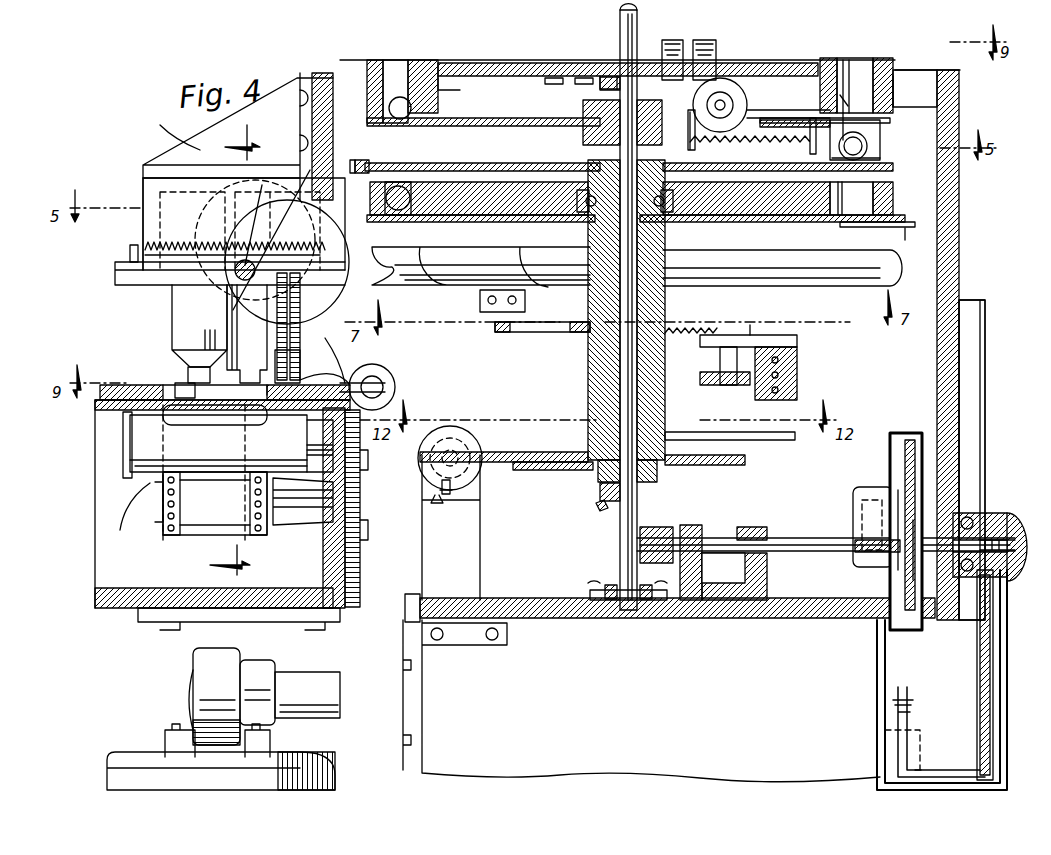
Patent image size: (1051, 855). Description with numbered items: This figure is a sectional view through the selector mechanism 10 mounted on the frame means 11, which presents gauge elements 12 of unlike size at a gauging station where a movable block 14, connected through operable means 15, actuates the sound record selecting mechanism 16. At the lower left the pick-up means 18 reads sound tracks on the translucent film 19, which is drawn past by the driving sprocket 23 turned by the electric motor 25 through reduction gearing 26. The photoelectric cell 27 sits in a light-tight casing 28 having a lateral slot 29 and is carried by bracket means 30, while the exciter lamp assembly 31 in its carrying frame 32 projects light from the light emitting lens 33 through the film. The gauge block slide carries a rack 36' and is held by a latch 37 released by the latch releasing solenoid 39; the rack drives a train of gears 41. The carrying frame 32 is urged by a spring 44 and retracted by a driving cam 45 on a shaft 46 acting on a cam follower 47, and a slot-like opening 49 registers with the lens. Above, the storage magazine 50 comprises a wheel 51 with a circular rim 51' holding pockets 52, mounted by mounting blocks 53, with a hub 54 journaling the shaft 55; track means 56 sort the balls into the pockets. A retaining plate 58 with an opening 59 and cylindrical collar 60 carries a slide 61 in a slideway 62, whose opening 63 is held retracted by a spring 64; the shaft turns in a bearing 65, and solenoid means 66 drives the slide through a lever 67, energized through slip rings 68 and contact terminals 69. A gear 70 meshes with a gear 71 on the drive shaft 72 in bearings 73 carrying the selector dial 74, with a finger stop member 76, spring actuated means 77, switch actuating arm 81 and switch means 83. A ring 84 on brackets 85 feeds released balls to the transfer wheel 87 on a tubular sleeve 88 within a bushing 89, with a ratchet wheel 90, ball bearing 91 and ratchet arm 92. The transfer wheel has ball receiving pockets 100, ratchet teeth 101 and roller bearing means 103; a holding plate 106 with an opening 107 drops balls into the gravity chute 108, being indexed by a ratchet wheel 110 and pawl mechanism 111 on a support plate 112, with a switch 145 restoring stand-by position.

The selector mechanism 10 is at (155, 126).
The frame means 11 is at (312, 127).
The gauge elements 12 is at (403, 118).
The movable block 14 is at (235, 350).
The operable means 15 is at (378, 350).
The sound record selecting mechanism 16 is at (130, 330).
The light sensitive pick-up means 18 is at (125, 532).
The translucent film 19 is at (195, 415).
The driving sprocket 23 is at (211, 503).
The electric motor 25 is at (138, 762).
The reduction gearing 26 is at (388, 590).
The photoelectric cell 27 is at (180, 390).
The light-tight casing 28 is at (125, 436).
The lateral slot 29 is at (245, 422).
The bracket means 30 is at (303, 501).
The exciter lamp assembly 31 is at (170, 226).
The carrying frame 32 is at (195, 255).
The light emitting lens 33 is at (172, 343).
The rack 36' is at (274, 326).
The latch 37 is at (335, 372).
The latch releasing solenoid 39 is at (395, 380).
The train of gears 41 is at (313, 352).
The spring 44 is at (248, 230).
The driving cam 45 is at (165, 205).
The shaft 46 is at (225, 300).
The cam follower 47 is at (153, 270).
The slot-like opening 49 is at (205, 395).
The storage magazine 50 is at (905, 42).
The wheel 51 is at (628, 56).
The circular rim 51' is at (683, 91).
The pockets 52 is at (420, 75).
The mounting blocks 53 is at (322, 73).
The hub 54 is at (603, 80).
The shaft 55 is at (638, 38).
The track means 56 is at (376, 60).
The retaining plate 58 is at (497, 113).
The opening 59 is at (875, 128).
The cylindrical collar 60 is at (870, 155).
The slide 61 is at (890, 120).
The slideway 62 is at (770, 118).
The opening 63 is at (853, 106).
The spring 64 is at (745, 145).
The bearing 65 is at (598, 598).
The solenoid means 66 is at (730, 85).
The lever 67 is at (762, 95).
The slip rings 68 is at (584, 85).
The contact terminals 69 is at (705, 40).
The gear 70 is at (600, 512).
The gear 71 is at (660, 527).
The drive shaft 72 is at (798, 538).
The bearings 73 is at (705, 530).
The selector dial 74 is at (985, 416).
The finger stop member 76 is at (1007, 755).
The spring actuated means 77 is at (890, 478).
The switch actuating arm 81 is at (983, 680).
The switch means 83 is at (920, 740).
The ring 84 is at (540, 170).
The brackets 85 is at (365, 160).
The transfer wheel 87 is at (775, 222).
The tubular sleeve 88 is at (575, 368).
The bushing 89 is at (668, 240).
The ratchet wheel 90 is at (545, 470).
The ball bearing 91 is at (680, 450).
The ratchet arm 92 is at (525, 452).
The ball receiving pockets 100 is at (893, 195).
The ratchet teeth 101 is at (370, 215).
The roller bearing means 103 is at (588, 182).
The holding plate 106 is at (480, 222).
The opening 107 is at (855, 228).
The gravity chute 108 is at (450, 283).
The ratchet wheel 110 is at (500, 332).
The pawl mechanism 111 is at (832, 335).
The support plate 112 is at (738, 432).
The switch 145 is at (908, 232).